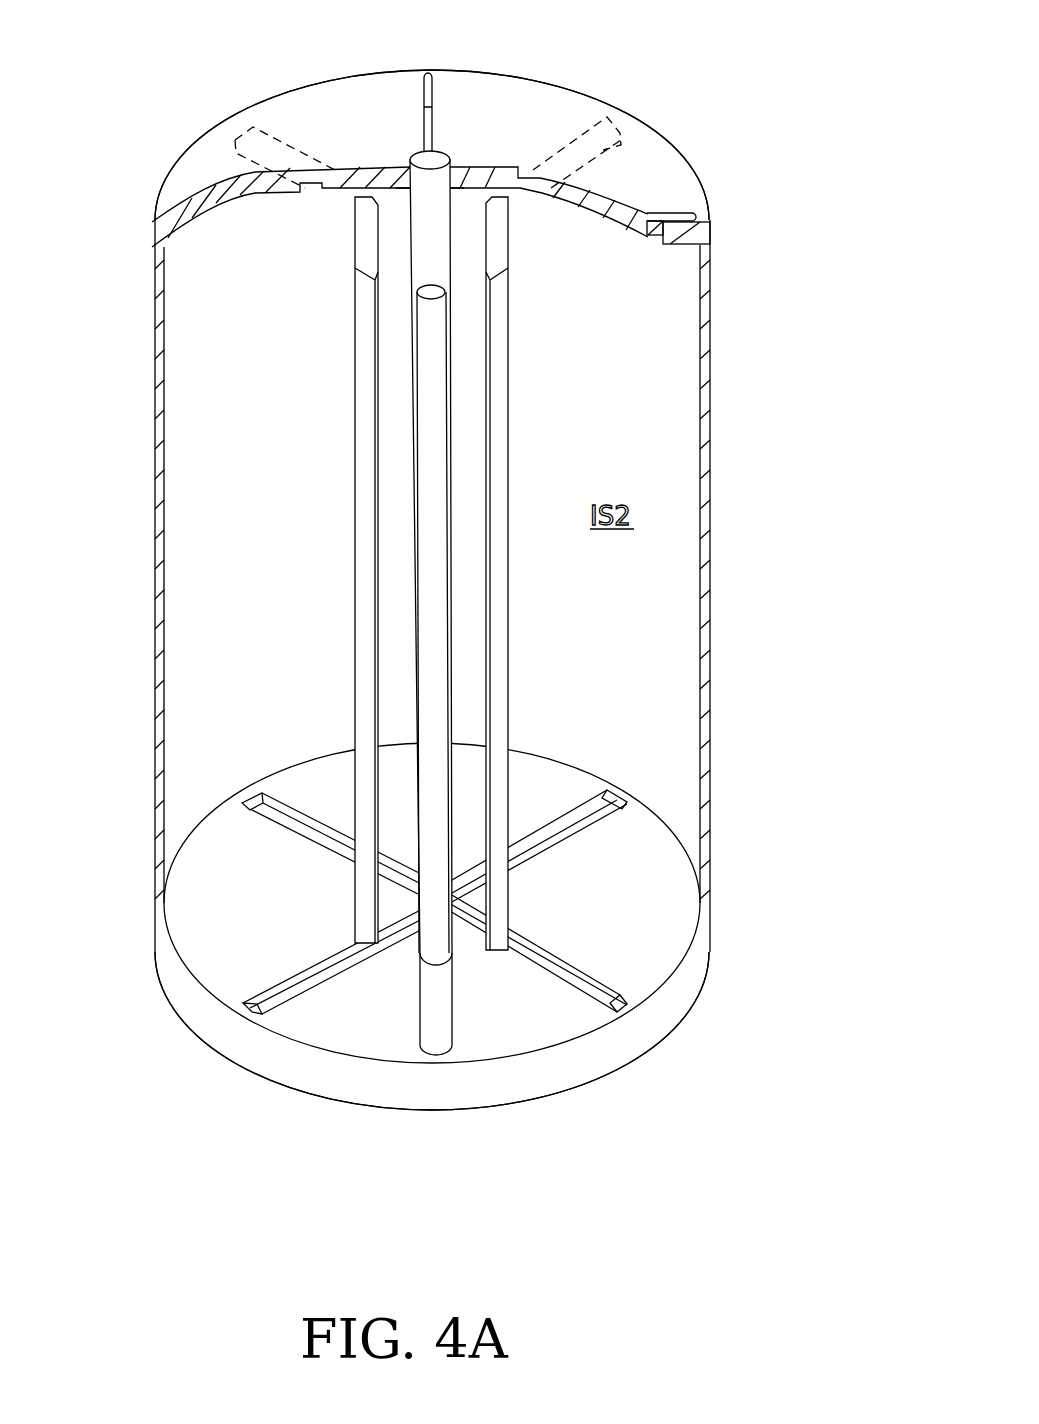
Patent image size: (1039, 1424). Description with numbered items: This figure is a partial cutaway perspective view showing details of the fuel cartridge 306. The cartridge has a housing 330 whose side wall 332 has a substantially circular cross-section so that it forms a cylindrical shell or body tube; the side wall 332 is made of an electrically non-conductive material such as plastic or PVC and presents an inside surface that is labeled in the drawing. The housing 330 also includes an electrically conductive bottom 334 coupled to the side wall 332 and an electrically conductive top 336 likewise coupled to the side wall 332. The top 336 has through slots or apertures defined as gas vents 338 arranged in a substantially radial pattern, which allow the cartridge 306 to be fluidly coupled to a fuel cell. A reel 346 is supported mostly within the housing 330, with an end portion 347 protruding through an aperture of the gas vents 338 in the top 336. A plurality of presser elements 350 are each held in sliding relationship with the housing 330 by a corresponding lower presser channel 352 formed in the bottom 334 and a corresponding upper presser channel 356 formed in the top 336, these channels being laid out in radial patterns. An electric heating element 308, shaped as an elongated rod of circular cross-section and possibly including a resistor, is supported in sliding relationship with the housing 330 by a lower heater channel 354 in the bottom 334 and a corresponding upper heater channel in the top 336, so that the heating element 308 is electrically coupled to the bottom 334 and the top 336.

The fuel cartridge 306 is at (645, 35).
The electric heating element 308 is at (427, 358).
The housing 330 is at (779, 537).
The side wall 332 is at (155, 470).
The bottom 334 is at (572, 1060).
The top 336 is at (492, 88).
The gas vents 338 is at (426, 73).
The reel 346 is at (414, 150).
The end portion 347 is at (446, 183).
The presser elements 350 is at (353, 223).
The lower presser channel 352 is at (272, 806).
The lower heater channel 354 is at (434, 1018).
The upper presser channel 356 is at (622, 100).